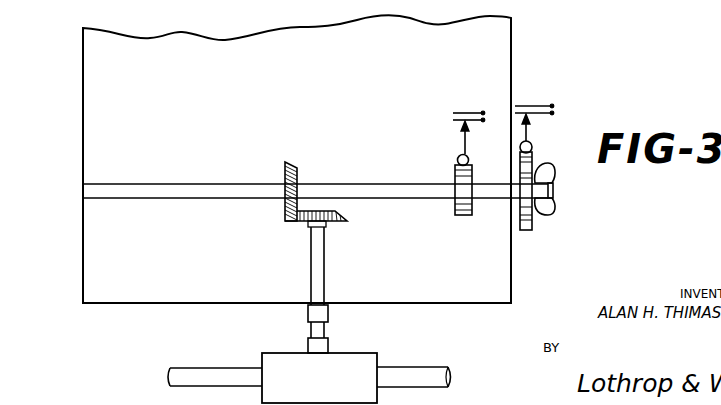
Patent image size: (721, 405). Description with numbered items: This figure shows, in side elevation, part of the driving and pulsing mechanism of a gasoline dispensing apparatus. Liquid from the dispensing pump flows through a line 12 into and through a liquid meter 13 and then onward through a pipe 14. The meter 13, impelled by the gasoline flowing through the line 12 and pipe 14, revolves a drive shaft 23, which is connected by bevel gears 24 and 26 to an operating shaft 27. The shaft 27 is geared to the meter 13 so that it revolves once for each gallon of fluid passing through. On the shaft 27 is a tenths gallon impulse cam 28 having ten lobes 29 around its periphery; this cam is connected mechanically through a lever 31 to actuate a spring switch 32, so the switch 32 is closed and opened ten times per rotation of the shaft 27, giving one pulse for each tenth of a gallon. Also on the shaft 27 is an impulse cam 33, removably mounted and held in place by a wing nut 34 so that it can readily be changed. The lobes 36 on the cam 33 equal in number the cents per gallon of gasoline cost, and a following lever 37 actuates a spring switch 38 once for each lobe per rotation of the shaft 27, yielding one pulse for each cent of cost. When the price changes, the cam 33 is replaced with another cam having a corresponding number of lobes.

The line 12 is at (231, 354).
The liquid meter 13 is at (319, 387).
The pipe 14 is at (433, 352).
The drive shaft 23 is at (326, 269).
The bevel gear 24 is at (293, 225).
The bevel gear 26 is at (285, 172).
The operating shaft 27 is at (366, 177).
The tenths gallon impulse cam 28 is at (463, 217).
The lobes 29 is at (455, 201).
The lever 31 is at (463, 150).
The spring switch 32 is at (458, 114).
The impulse cam 33 is at (526, 231).
The wing nut 34 is at (549, 208).
The lobes 36 is at (529, 166).
The following lever 37 is at (528, 133).
The spring switch 38 is at (516, 106).